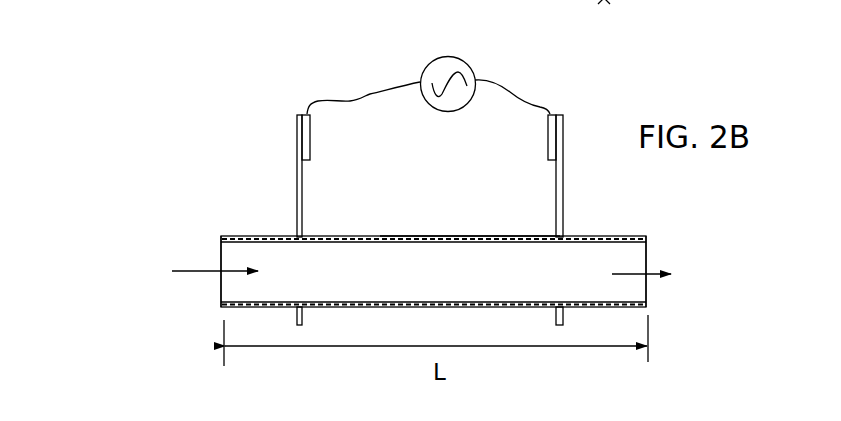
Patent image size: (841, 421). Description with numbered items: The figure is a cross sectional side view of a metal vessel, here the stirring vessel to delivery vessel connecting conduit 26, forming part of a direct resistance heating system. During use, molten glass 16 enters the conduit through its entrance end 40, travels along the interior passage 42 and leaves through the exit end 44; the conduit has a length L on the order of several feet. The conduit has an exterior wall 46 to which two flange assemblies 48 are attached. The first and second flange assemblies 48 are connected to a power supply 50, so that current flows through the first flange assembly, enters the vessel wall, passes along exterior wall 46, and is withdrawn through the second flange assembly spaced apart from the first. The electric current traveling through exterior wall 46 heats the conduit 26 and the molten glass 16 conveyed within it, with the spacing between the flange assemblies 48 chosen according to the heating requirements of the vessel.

The molten glass 16 is at (202, 270).
The connecting conduit 26 is at (374, 232).
The entrance end 40 is at (220, 292).
The interior passage 42 is at (451, 284).
The exit end 44 is at (648, 254).
The exterior wall 46 is at (469, 237).
The flange assemblies 48 is at (296, 222).
The power supply 50 is at (446, 112).